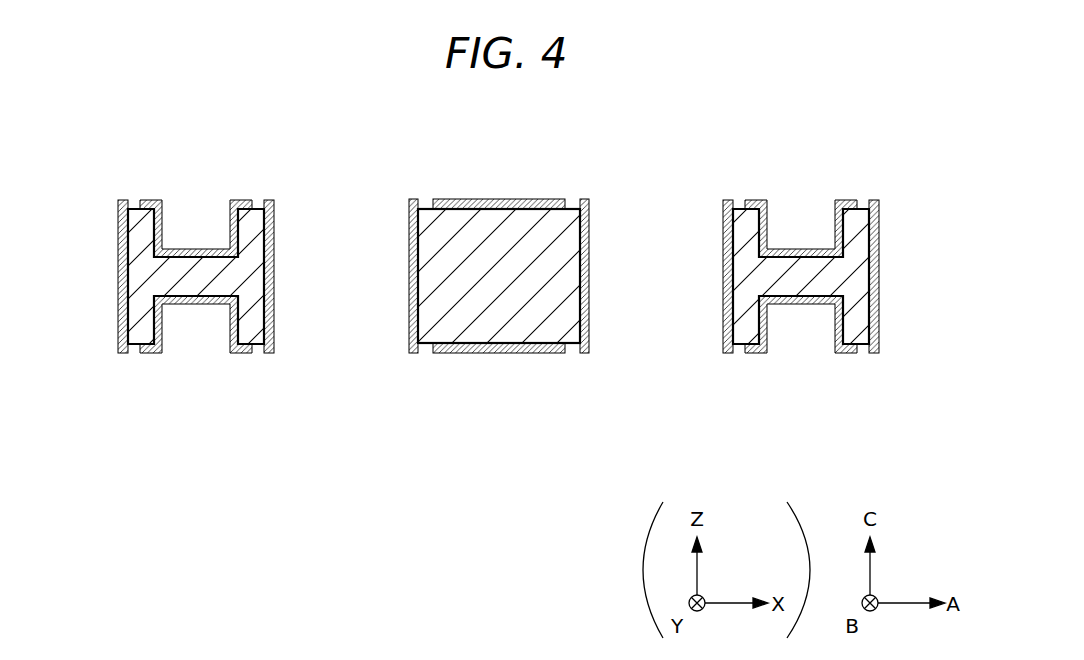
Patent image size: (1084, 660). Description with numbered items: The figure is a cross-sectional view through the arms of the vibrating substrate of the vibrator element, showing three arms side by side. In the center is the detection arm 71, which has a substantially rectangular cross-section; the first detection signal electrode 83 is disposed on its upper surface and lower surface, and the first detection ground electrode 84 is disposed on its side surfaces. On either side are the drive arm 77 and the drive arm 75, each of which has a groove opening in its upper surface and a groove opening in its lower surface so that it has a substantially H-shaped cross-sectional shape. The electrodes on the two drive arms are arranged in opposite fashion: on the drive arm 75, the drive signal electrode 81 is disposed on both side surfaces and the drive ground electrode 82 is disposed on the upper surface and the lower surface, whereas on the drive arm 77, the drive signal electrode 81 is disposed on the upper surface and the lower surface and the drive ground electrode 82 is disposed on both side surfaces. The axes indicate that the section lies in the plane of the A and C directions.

The detection arm 71 is at (510, 277).
The drive arm 75 is at (815, 278).
The drive arm 77 is at (173, 278).
The drive signal electrode 81 is at (178, 250).
The drive ground electrode 82 is at (125, 272).
The first detection signal electrode 83 is at (504, 205).
The first detection ground electrode 84 is at (409, 290).